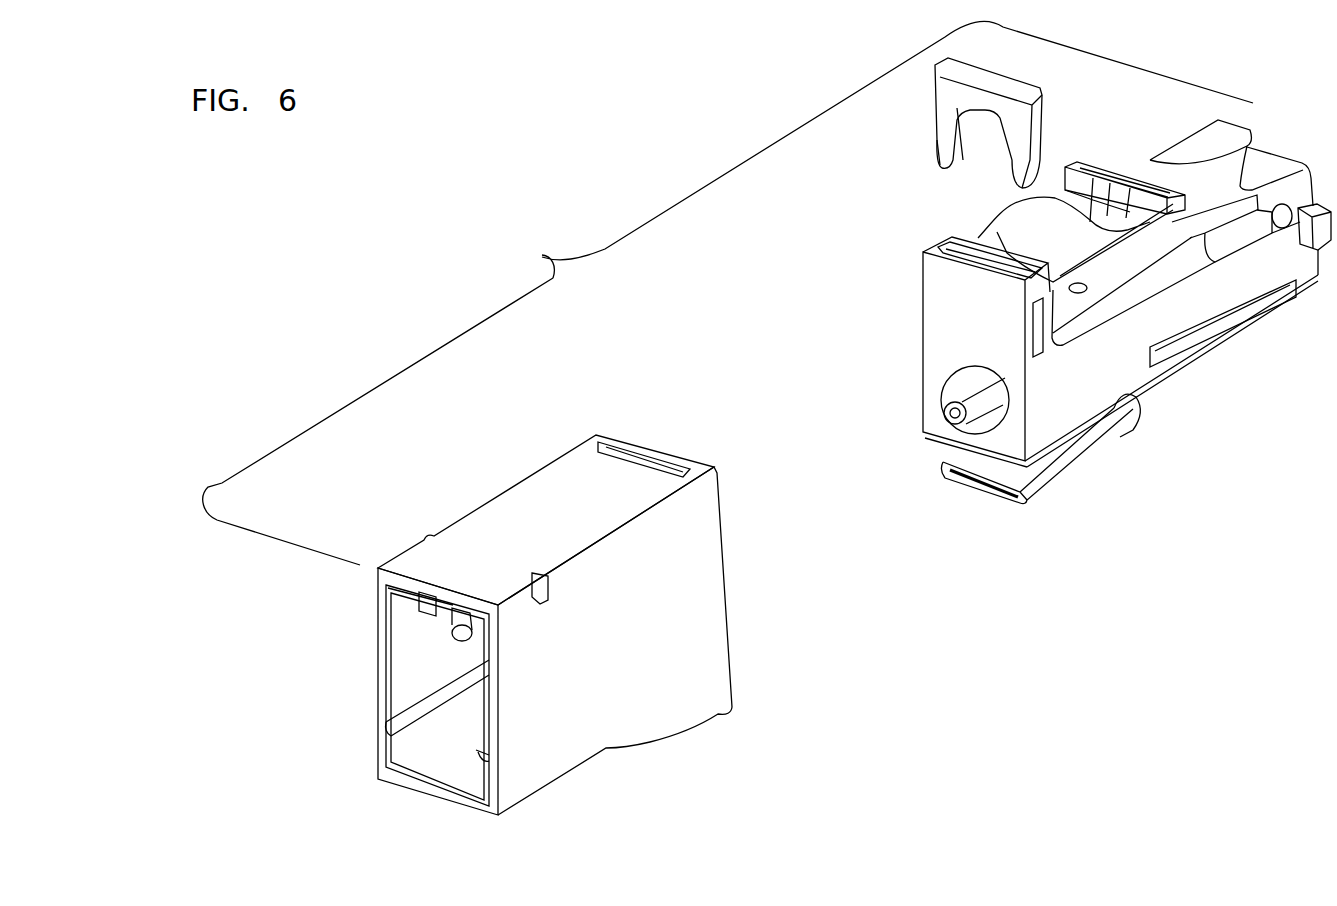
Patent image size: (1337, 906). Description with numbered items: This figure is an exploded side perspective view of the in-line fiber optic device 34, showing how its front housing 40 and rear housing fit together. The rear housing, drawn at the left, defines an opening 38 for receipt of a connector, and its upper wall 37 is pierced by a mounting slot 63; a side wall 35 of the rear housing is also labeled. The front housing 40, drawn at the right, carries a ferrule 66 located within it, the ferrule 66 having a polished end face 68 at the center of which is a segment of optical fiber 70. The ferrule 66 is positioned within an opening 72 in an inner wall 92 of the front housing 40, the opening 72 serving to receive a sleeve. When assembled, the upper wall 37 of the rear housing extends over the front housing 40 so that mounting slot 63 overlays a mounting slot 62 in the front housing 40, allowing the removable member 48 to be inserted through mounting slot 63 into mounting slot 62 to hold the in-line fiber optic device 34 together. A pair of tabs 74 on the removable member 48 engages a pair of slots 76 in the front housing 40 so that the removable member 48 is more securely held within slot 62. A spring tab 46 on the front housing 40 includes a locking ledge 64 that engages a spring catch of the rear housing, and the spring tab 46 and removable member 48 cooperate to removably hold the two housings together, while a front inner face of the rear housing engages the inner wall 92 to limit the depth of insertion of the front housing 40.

The in-line fiber optic device 34 is at (728, 293).
The removable member 48 is at (957, 90).
The tabs 74 is at (1037, 160).
The inner wall 92 is at (925, 277).
The mounting slot 62 is at (958, 248).
The slots 76 is at (1037, 335).
The ferrule 66 is at (977, 392).
The polished end face 68 is at (950, 415).
The optical fiber 70 is at (955, 418).
The opening 72 is at (977, 362).
The locking ledge 64 is at (1032, 499).
The spring tab 46 is at (1098, 442).
The front housing 40 is at (1184, 388).
The upper wall 37 is at (577, 521).
The mounting slot 63 is at (637, 458).
The side wall 35 is at (645, 658).
The opening 38 is at (445, 759).